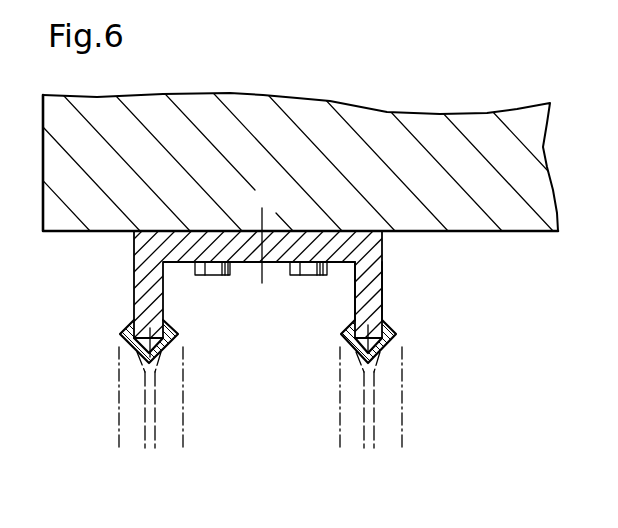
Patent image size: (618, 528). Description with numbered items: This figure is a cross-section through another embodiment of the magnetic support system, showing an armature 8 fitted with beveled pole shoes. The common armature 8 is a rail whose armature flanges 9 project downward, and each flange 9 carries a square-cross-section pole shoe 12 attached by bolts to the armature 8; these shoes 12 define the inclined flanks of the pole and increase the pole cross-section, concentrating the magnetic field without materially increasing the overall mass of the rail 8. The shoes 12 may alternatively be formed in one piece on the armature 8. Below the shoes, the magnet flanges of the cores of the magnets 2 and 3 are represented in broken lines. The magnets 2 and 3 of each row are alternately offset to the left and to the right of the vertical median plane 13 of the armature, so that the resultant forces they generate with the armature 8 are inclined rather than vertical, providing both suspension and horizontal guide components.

The magnet 2 is at (336, 412).
The magnet 3 is at (406, 410).
The armature 8 is at (389, 271).
The armature flange 9 is at (385, 291).
The pole shoe 12 is at (397, 335).
The vertical median plane 13 is at (262, 208).